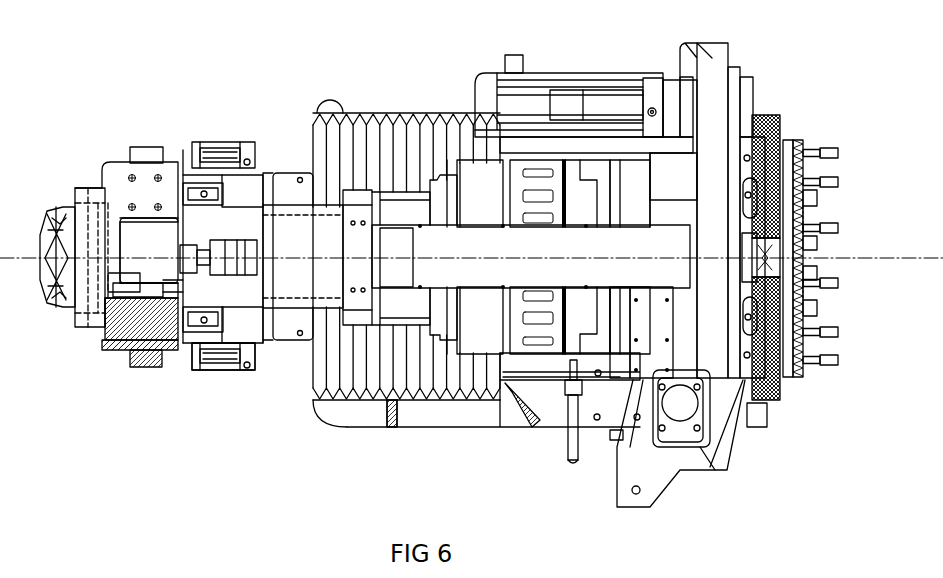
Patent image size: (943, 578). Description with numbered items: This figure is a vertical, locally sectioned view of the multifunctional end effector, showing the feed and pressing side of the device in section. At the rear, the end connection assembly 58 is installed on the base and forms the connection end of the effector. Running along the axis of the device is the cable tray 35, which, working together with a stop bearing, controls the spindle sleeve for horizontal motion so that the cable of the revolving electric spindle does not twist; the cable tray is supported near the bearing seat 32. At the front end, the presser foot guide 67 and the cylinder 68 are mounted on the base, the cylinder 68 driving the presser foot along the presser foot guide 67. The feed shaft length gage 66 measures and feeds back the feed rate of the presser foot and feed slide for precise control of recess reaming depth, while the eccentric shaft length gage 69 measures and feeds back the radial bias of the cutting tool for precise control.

The bearing seat 32 is at (305, 245).
The cable tray 35 is at (435, 248).
The end connection assembly 58 is at (762, 113).
The feed shaft length gage 66 is at (123, 347).
The presser foot guide 67 is at (143, 352).
The cylinder 68 is at (213, 360).
The eccentric shaft length gage 69 is at (572, 462).